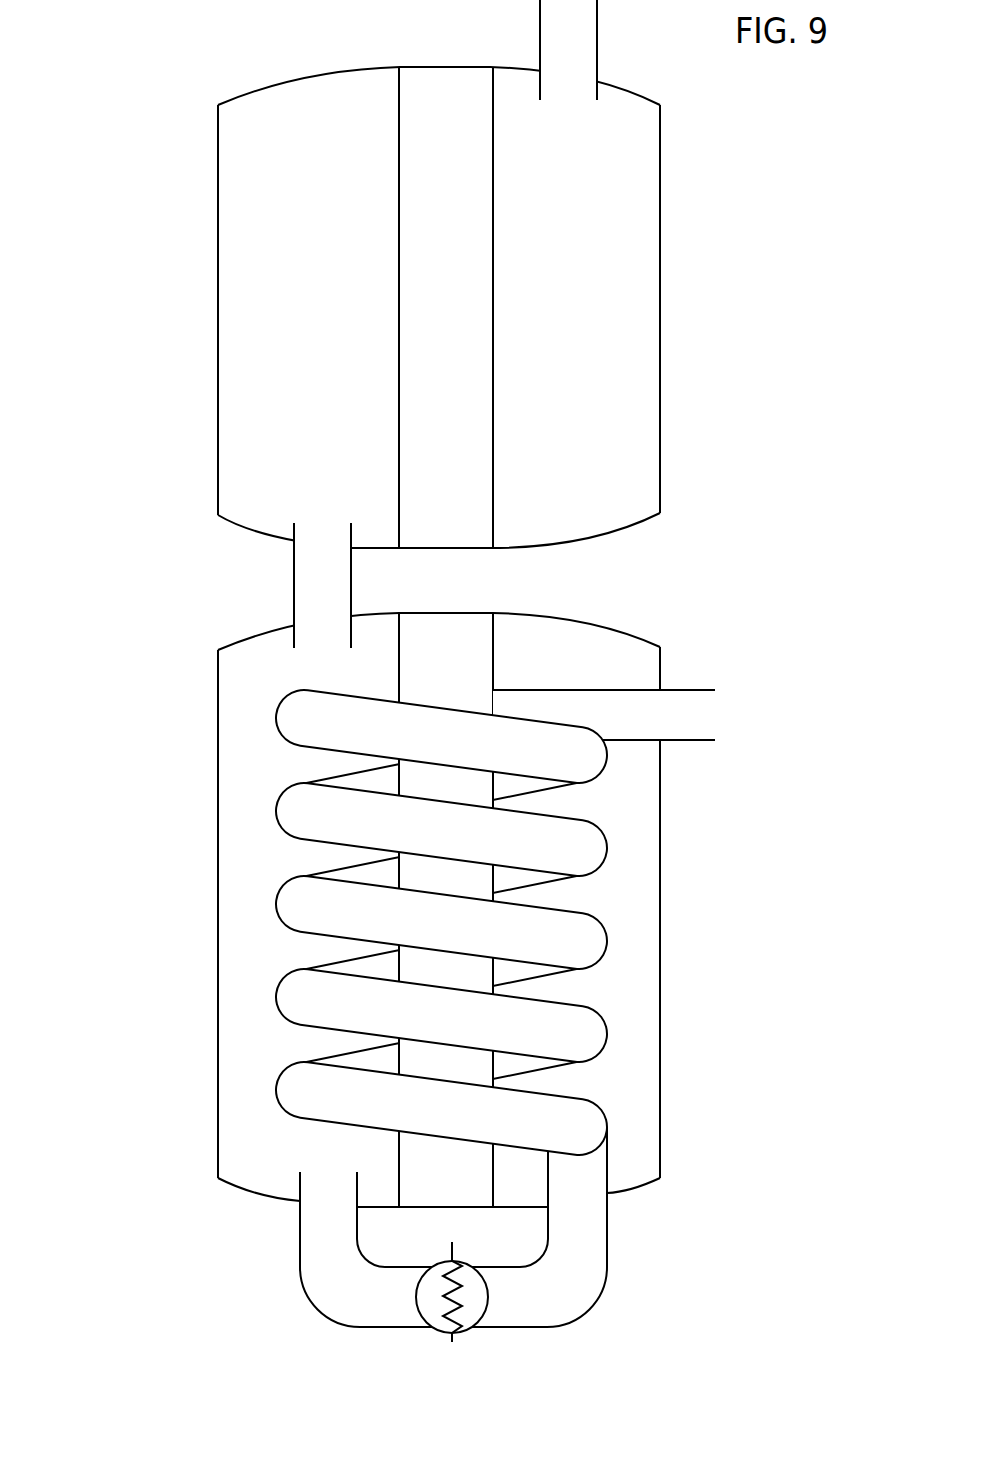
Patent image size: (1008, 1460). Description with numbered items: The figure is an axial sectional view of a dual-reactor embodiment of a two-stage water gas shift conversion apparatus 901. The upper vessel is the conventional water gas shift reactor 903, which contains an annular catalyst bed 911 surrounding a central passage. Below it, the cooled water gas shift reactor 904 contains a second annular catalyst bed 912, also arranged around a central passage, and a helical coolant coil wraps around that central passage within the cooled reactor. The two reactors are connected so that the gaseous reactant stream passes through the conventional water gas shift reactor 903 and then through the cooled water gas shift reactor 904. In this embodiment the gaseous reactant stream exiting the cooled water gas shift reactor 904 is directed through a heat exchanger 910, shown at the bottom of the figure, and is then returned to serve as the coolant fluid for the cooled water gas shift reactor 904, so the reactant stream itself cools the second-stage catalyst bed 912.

The water gas shift conversion apparatus 901 is at (688, 249).
The conventional water gas shift reactor 903 is at (218, 360).
The catalyst bed 911 is at (643, 412).
The catalyst bed 912 is at (620, 647).
The cooled water gas shift reactor 904 is at (218, 787).
The heat exchanger 910 is at (472, 1330).